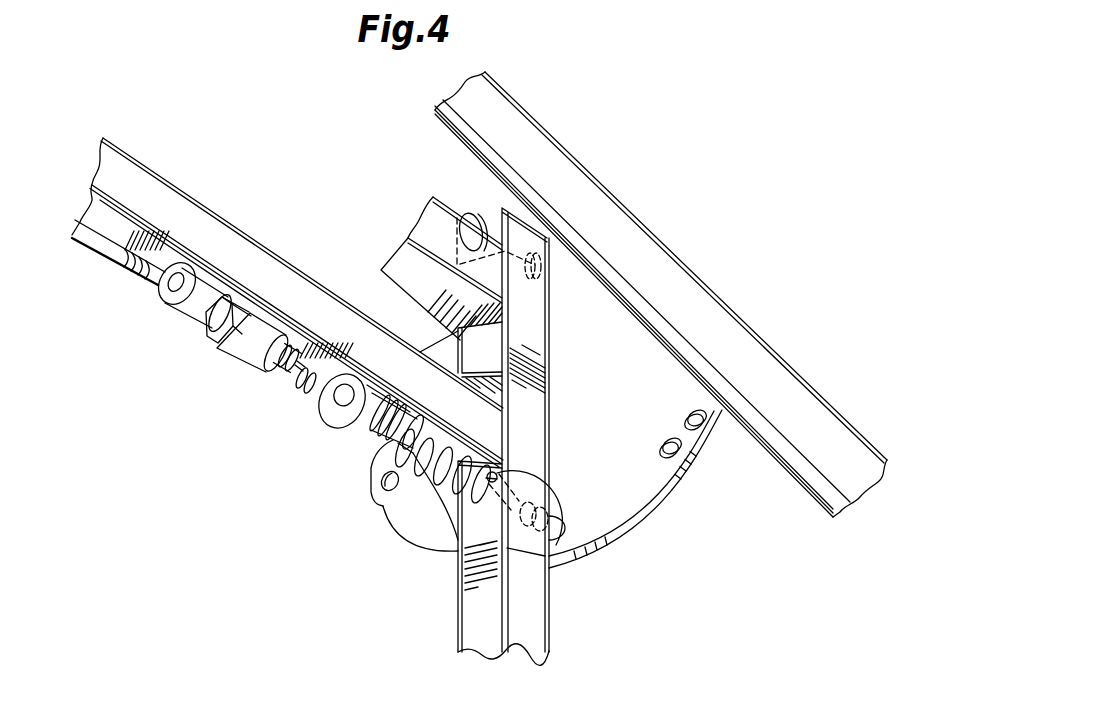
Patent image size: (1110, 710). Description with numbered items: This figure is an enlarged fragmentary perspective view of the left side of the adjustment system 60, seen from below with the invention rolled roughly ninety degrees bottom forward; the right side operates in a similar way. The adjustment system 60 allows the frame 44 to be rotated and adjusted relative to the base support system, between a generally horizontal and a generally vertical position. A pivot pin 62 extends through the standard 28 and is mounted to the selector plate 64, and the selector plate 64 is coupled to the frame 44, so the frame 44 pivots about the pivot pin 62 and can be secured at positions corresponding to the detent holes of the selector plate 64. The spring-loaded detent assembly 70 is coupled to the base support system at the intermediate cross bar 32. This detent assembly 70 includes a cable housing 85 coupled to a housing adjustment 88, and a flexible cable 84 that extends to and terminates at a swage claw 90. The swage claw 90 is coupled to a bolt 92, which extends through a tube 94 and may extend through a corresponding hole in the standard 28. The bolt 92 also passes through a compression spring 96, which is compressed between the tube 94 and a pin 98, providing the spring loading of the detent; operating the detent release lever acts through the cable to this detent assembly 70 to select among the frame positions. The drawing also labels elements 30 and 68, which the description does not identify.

The standard 28 is at (552, 612).
The mounting bracket 30 is at (397, 258).
The intermediate cross bar 32 is at (252, 237).
The frame 44 is at (727, 307).
The adjustment system 60 is at (661, 294).
The pivot pin 62 is at (477, 218).
The selector plate 64 is at (614, 500).
The rivets 68 is at (682, 446).
The spring-loaded detent assembly 70 is at (310, 393).
The flexible cable 84 is at (295, 382).
The cable housing 85 is at (118, 258).
The housing adjustment 88 is at (168, 321).
The swage claw 90 is at (322, 388).
The bolt 92 is at (386, 496).
The tube 94 is at (360, 440).
The compression spring 96 is at (417, 533).
The pin 98 is at (553, 558).